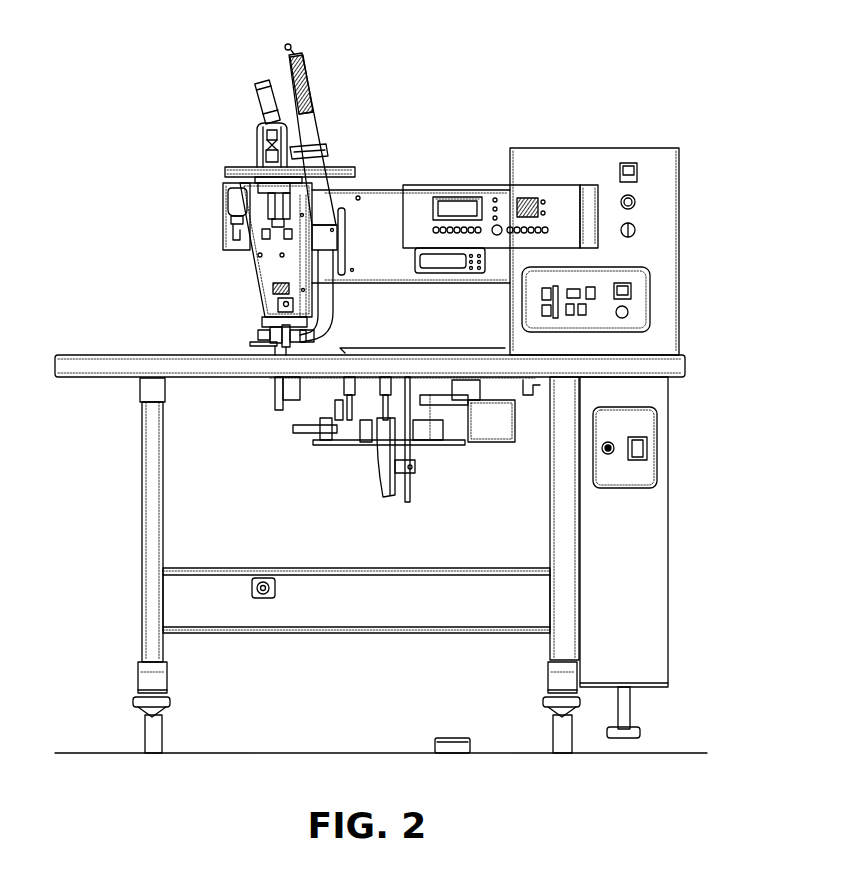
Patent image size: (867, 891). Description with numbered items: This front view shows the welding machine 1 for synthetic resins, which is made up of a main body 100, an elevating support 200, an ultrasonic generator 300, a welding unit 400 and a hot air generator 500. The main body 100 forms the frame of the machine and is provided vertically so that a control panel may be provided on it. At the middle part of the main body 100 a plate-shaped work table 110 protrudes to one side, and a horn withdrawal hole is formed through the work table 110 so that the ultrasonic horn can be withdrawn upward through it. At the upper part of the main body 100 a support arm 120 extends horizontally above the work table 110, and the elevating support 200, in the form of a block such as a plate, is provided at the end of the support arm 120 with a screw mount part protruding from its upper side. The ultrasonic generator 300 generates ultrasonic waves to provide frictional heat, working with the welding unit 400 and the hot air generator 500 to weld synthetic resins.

The welding machine for synthetic resins 1 is at (60, 133).
The main body 100 is at (618, 155).
The work table 110 is at (105, 358).
The support arm 120 is at (420, 207).
The elevating support 200 is at (343, 178).
The ultrasonic generator 300 is at (303, 467).
The welding unit 400 is at (230, 269).
The hot air generator 500 is at (340, 107).